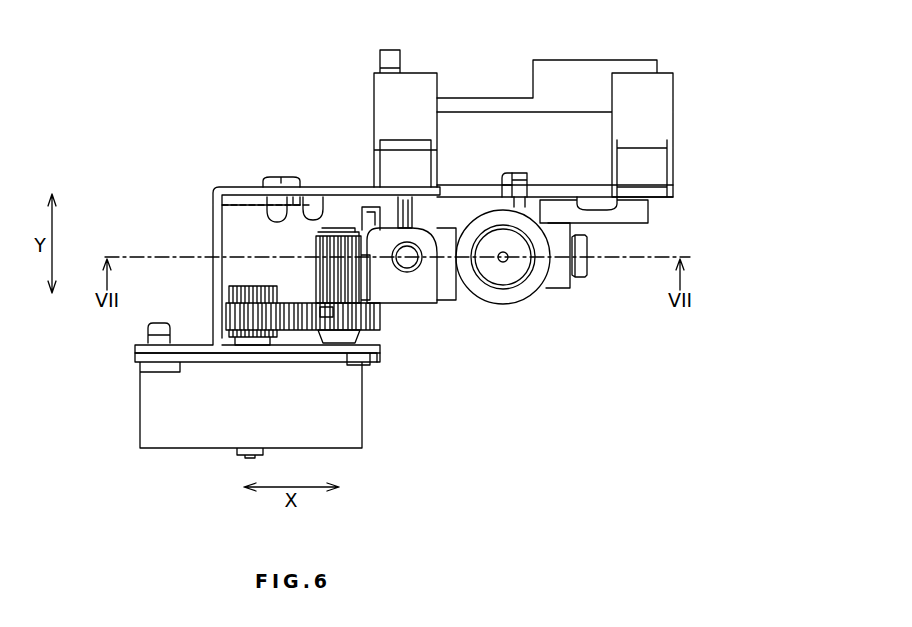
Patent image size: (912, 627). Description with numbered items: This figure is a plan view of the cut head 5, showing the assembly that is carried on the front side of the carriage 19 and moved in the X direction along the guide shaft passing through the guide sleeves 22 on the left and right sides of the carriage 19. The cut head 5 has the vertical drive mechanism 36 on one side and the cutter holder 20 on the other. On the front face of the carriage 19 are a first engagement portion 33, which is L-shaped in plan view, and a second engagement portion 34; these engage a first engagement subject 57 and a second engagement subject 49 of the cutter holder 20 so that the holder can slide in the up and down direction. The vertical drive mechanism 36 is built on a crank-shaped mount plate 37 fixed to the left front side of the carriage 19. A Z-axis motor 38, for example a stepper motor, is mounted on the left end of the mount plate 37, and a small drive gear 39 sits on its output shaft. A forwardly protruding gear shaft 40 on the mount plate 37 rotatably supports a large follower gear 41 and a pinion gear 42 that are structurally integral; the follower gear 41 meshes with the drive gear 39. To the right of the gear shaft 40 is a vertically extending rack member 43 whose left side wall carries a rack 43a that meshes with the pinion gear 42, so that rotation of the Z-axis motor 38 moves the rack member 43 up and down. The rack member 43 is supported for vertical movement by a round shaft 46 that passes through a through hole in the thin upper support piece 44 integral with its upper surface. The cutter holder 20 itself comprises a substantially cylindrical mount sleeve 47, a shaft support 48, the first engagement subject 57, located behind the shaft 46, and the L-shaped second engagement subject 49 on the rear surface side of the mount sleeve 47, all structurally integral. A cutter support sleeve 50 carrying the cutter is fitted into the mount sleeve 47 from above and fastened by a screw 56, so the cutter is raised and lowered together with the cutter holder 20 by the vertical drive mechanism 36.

The cut head 5 is at (190, 152).
The carriage 19 is at (352, 190).
The cutter holder 20 is at (505, 306).
The guide sleeve 22 is at (417, 85).
The first engagement portion 33 is at (437, 187).
The second engagement portion 34 is at (509, 175).
The vertical drive mechanism 36 is at (383, 392).
The mount plate 37 is at (213, 230).
The Z-axis motor 38 is at (195, 436).
The drive gear 39 is at (230, 290).
The gear shaft 40 is at (336, 218).
The follower gear 41 is at (400, 332).
The pinion gear 42 is at (318, 271).
The rack member 43 is at (368, 190).
The rack 43a is at (318, 250).
The upper support piece 44 is at (414, 330).
The shaft 46 is at (404, 268).
The mount sleeve 47 is at (548, 290).
The shaft support 48 is at (432, 222).
The second engagement subject 49 is at (518, 186).
The cutter support sleeve 50 is at (480, 296).
The screw 56 is at (588, 268).
The first engagement subject 57 is at (410, 200).